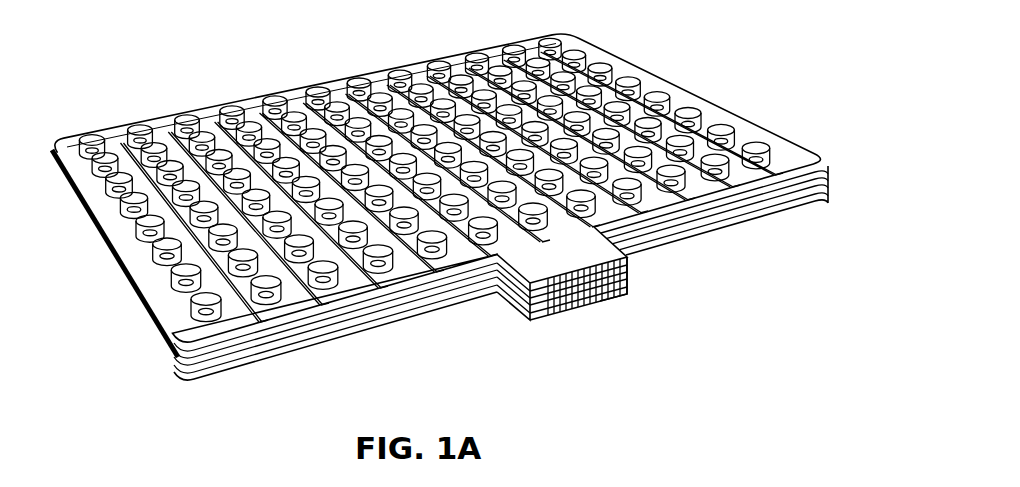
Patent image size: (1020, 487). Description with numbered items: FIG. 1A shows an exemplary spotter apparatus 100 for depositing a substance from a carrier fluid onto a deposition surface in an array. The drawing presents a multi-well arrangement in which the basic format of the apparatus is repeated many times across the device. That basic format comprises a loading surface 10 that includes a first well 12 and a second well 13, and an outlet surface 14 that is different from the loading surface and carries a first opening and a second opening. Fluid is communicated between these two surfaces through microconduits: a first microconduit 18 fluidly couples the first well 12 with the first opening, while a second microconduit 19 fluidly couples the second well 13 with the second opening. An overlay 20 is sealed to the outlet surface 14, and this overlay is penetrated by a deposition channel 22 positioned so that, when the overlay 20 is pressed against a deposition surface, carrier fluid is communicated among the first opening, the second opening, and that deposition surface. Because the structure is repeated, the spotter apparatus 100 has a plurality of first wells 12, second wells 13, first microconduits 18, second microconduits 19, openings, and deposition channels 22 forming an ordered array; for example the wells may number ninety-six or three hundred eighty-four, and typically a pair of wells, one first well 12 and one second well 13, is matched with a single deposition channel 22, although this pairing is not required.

The spotter apparatus 100 is at (438, 202).
The loading surface 10 is at (792, 169).
The first well 12 is at (150, 243).
The second well 13 is at (690, 108).
The outlet surface 14 is at (599, 306).
The first microconduit 18 is at (396, 265).
The second microconduit 19 is at (737, 203).
The overlay 20 is at (617, 295).
The deposition channel 22 is at (550, 310).